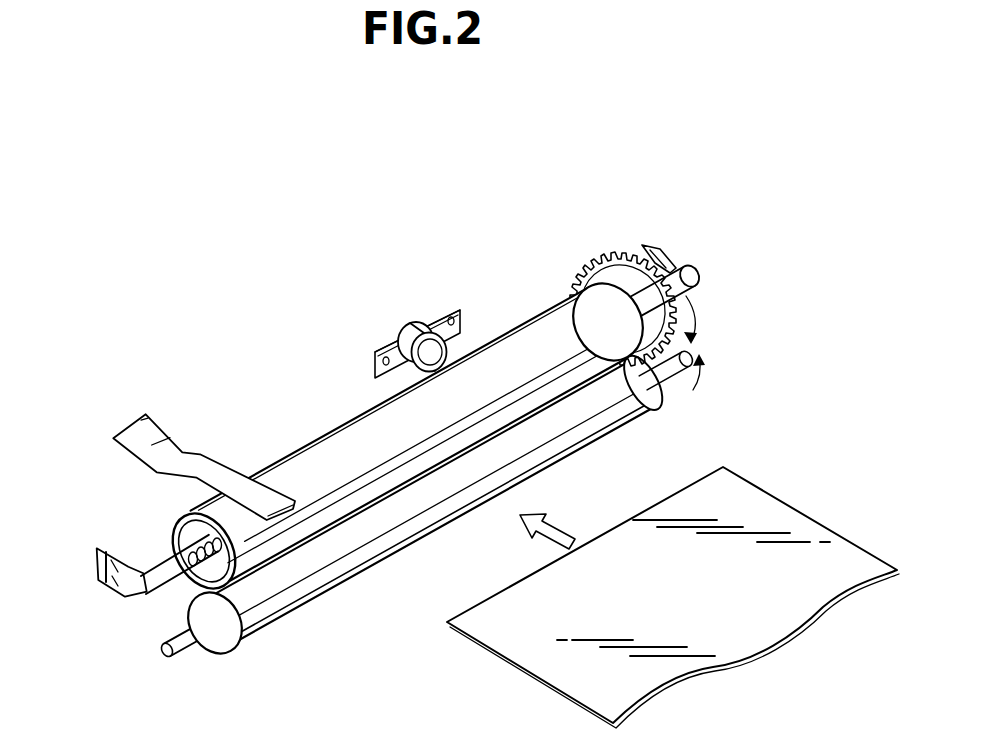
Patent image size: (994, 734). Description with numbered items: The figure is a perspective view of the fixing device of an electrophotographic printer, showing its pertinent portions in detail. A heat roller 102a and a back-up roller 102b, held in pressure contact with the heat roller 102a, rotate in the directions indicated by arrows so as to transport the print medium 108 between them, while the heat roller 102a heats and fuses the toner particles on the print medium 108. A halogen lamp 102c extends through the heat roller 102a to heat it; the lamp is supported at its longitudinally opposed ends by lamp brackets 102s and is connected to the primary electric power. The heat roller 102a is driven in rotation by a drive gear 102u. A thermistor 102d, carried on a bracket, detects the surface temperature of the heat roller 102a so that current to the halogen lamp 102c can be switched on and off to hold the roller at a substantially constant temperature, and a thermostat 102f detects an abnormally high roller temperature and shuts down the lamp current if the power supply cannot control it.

The heat roller 102a is at (347, 420).
The back-up roller 102b is at (331, 588).
The halogen lamp 102c is at (158, 592).
The thermistor 102d is at (216, 492).
The thermostat 102f is at (413, 325).
The lamp brackets 102s is at (656, 258).
The drive gear 102u is at (584, 262).
The print medium 108 is at (562, 658).